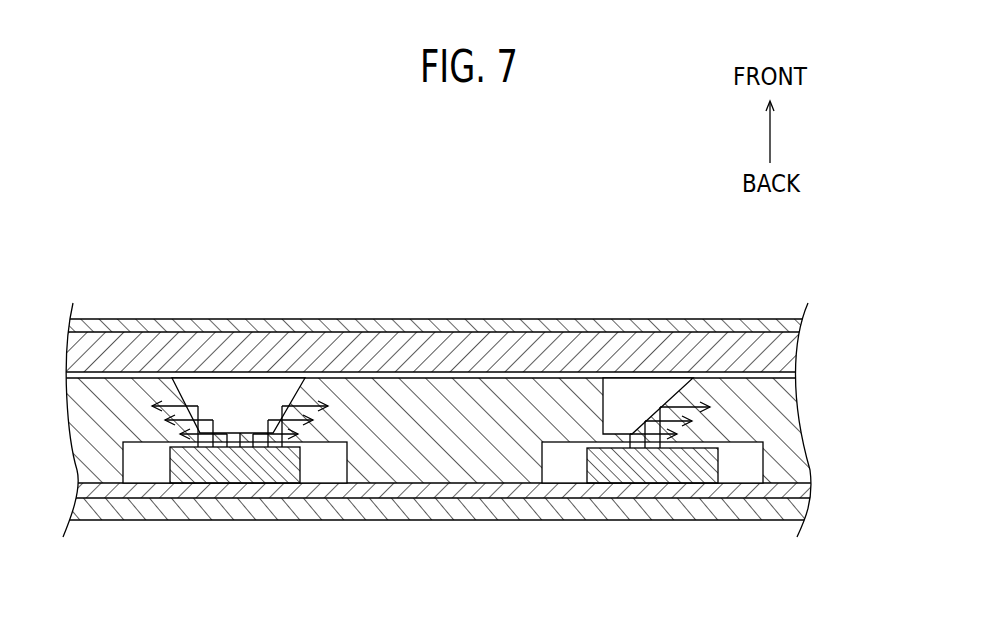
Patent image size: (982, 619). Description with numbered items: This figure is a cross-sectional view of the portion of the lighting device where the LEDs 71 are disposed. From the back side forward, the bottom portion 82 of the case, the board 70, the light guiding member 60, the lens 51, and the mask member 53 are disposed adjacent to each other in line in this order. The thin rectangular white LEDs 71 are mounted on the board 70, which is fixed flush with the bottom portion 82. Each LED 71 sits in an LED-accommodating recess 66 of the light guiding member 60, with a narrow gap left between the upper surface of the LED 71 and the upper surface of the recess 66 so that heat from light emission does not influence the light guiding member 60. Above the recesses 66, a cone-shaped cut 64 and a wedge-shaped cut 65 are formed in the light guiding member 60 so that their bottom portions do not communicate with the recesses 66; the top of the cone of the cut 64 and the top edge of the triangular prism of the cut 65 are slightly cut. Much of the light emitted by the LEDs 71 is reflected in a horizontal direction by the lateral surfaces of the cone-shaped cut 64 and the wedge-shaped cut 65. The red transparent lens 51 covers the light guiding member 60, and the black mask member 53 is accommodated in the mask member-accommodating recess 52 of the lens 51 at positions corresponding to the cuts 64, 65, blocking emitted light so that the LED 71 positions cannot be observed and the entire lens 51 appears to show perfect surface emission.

The lens 51 is at (401, 345).
The mask member-accommodating recess 52 is at (333, 330).
The mask member 53 is at (458, 328).
The light guiding member 60 is at (533, 383).
The cone-shaped cut 64 is at (240, 402).
The wedge-shaped cut 65 is at (633, 402).
The LED-accommodating recess 66 is at (145, 444).
The board 70 is at (463, 493).
The LED 71 is at (283, 462).
The bottom portion 82 is at (398, 512).